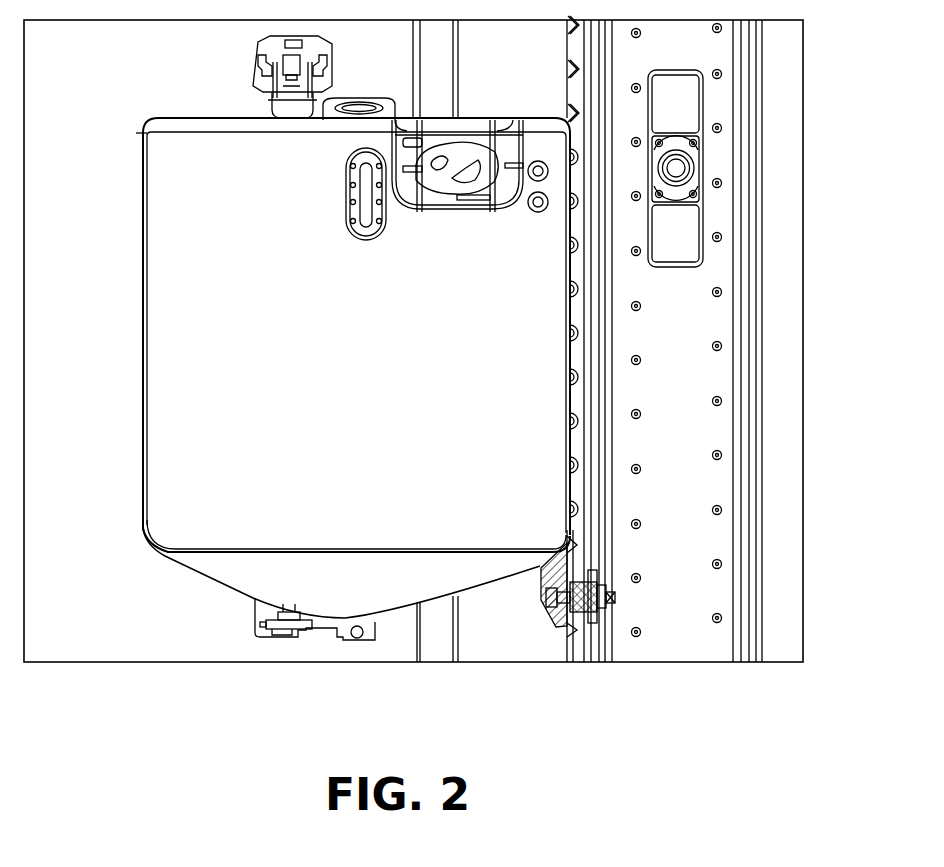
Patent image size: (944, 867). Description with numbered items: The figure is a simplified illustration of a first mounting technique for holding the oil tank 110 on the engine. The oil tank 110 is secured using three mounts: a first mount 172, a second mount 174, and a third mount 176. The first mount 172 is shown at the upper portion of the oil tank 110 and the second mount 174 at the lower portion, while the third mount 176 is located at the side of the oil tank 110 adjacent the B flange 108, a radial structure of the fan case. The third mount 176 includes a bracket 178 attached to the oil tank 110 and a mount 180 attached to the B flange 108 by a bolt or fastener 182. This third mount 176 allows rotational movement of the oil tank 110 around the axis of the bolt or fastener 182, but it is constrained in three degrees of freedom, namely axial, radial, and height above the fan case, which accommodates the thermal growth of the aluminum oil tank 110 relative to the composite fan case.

The B flange 108 is at (608, 633).
The oil tank 110 is at (143, 403).
The first mount 172 is at (216, 84).
The second mount 174 is at (241, 609).
The third mount 176 is at (617, 568).
The bracket 178 is at (560, 628).
The mount 180 is at (572, 628).
The bolt or fastener 182 is at (545, 596).